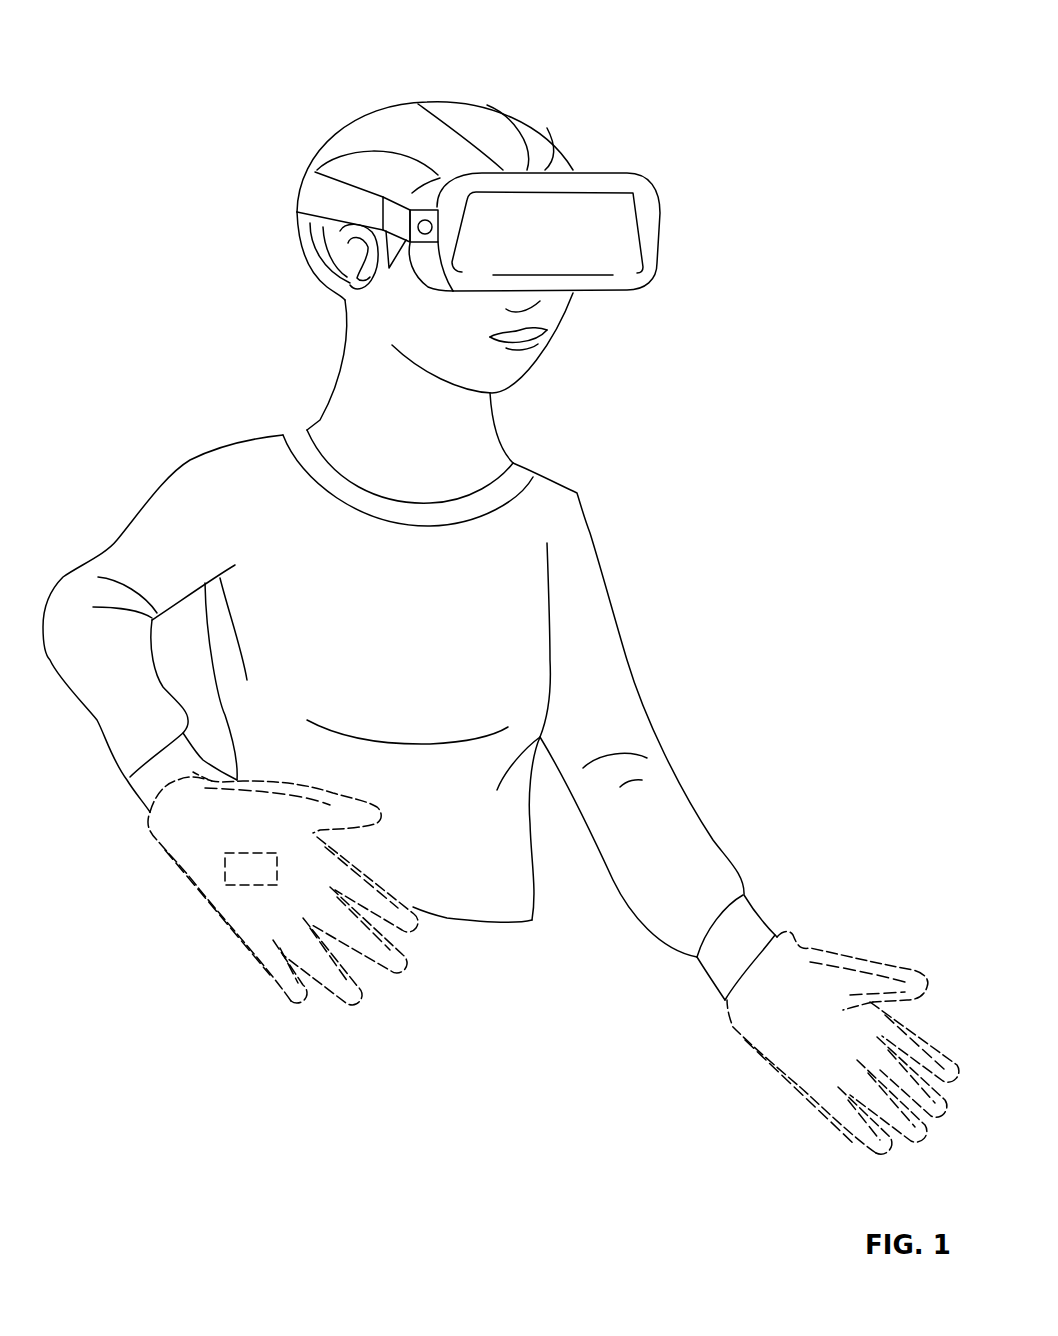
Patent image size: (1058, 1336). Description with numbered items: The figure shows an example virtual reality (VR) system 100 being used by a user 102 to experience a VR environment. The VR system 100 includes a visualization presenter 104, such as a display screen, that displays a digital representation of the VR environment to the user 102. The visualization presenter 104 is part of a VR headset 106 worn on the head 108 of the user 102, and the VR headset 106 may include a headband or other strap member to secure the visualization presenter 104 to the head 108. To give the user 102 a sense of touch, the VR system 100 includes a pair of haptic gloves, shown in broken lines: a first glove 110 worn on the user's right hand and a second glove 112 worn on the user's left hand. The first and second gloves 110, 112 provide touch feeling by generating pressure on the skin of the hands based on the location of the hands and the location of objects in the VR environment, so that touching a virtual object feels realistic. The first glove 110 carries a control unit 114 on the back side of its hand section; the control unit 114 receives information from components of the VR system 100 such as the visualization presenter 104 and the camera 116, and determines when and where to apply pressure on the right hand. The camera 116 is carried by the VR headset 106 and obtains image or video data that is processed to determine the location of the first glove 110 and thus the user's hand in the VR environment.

The virtual reality system 100 is at (178, 135).
The user 102 is at (243, 487).
The visualization presenter 104 is at (637, 190).
The VR headset 106 is at (337, 197).
The head 108 is at (437, 140).
The first glove 110 is at (237, 888).
The second glove 112 is at (832, 987).
The control unit 114 is at (233, 887).
The camera 116 is at (400, 197).